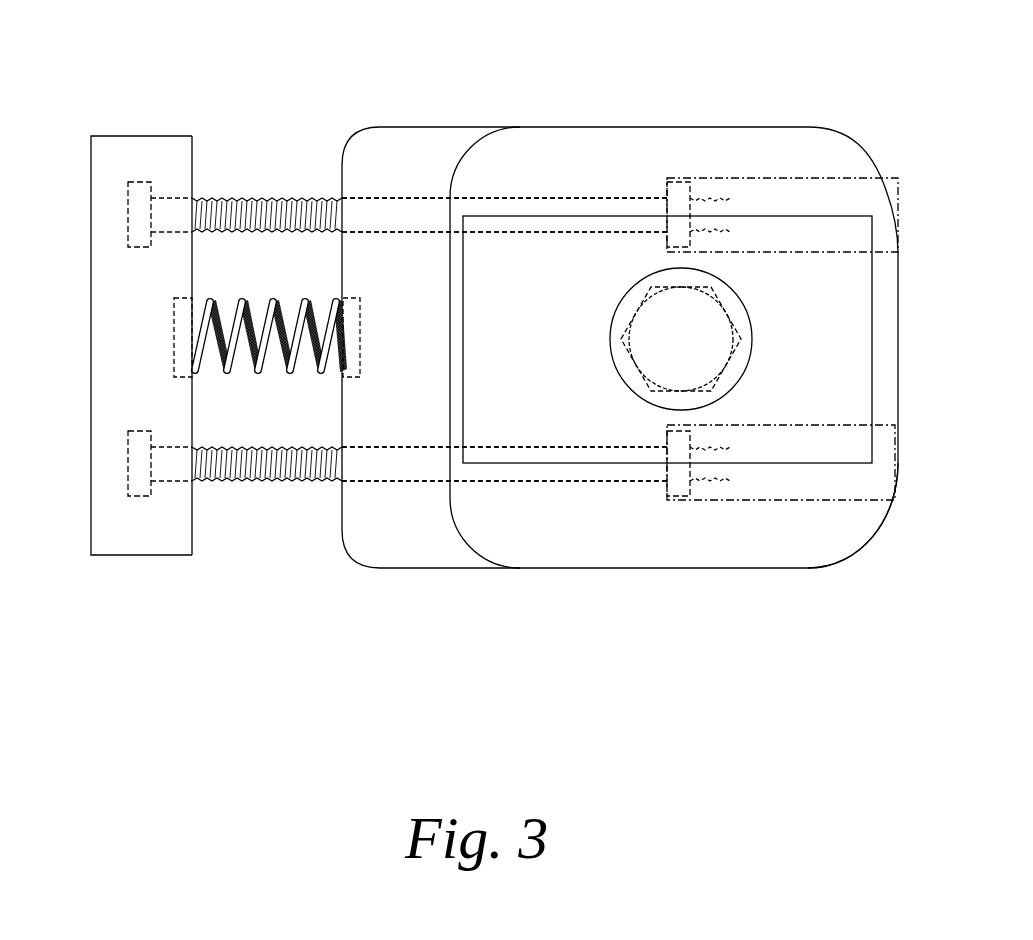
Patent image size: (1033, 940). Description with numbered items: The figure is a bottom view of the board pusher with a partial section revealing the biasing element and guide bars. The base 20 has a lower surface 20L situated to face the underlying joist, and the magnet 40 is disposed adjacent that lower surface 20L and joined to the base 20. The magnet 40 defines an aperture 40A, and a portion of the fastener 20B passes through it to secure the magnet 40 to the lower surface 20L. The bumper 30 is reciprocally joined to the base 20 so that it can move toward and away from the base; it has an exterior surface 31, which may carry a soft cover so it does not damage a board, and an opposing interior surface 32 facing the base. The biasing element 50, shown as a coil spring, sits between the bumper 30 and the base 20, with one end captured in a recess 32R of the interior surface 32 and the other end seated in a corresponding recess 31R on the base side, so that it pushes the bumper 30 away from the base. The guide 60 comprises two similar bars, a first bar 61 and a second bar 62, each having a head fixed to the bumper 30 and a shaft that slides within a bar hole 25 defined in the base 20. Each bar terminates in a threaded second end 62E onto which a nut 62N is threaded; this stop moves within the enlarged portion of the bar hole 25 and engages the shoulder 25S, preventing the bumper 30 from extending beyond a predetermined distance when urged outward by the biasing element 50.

The base 20 is at (866, 120).
The fastener 20B is at (657, 330).
The lower surface 20L is at (838, 525).
The bar hole 25 is at (395, 196).
The shoulder 25S is at (667, 195).
The bumper 30 is at (123, 278).
The exterior surface 31 is at (91, 190).
The spring recess of body 31R is at (352, 378).
The interior surface 32 is at (193, 195).
The recess 32R is at (176, 336).
The magnet 40 is at (852, 442).
The aperture 40A is at (748, 355).
The biasing element 50 is at (242, 310).
The guide 60 is at (524, 365).
The first bar 61 is at (255, 478).
The second bar 62 is at (257, 212).
The second end 62E is at (733, 209).
The nut 62N is at (690, 202).